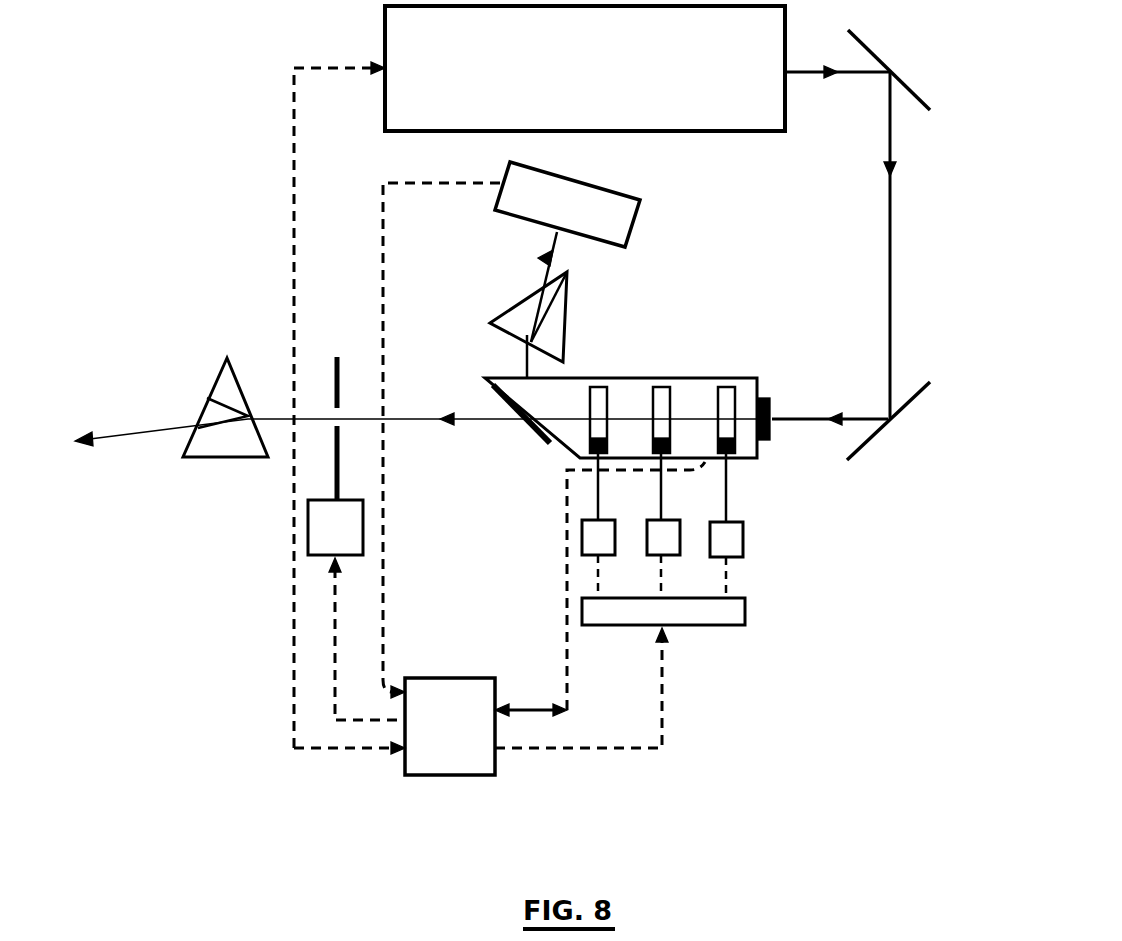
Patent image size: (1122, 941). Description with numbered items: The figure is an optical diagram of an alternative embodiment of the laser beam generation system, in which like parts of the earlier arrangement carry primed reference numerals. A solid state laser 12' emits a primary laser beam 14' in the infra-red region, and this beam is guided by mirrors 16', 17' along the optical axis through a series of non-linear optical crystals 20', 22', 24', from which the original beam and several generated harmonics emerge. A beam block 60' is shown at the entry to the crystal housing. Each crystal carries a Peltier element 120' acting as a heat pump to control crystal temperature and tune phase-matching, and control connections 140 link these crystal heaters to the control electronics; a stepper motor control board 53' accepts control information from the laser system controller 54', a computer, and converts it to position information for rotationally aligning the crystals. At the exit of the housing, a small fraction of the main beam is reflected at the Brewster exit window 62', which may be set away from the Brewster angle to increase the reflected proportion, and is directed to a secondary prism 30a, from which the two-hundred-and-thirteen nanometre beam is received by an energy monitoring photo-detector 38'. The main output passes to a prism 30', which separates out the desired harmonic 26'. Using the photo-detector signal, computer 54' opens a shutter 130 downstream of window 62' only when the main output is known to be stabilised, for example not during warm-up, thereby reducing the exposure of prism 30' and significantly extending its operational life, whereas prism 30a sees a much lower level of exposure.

The solid state laser 12' is at (585, 68).
The primary laser beam 14' is at (883, 242).
The mirror 16' is at (915, 66).
The mirror 17' is at (879, 421).
The beam block 60' is at (807, 458).
The Peltier element 120' is at (644, 476).
The Brewster exit window 62' is at (521, 449).
The non-linear optical crystal 24' is at (603, 461).
The non-linear optical crystal 22' is at (666, 461).
The non-linear optical crystal 20' is at (731, 461).
The stepper motor control board 53' is at (718, 619).
The control connections 140 is at (567, 578).
The secondary prism 30a is at (560, 300).
The energy monitoring photo-detector 38' is at (612, 204).
The shutter 130 is at (362, 488).
The prism 30' is at (225, 436).
The desired harmonic 26' is at (265, 401).
The laser system controller 54' is at (499, 418).